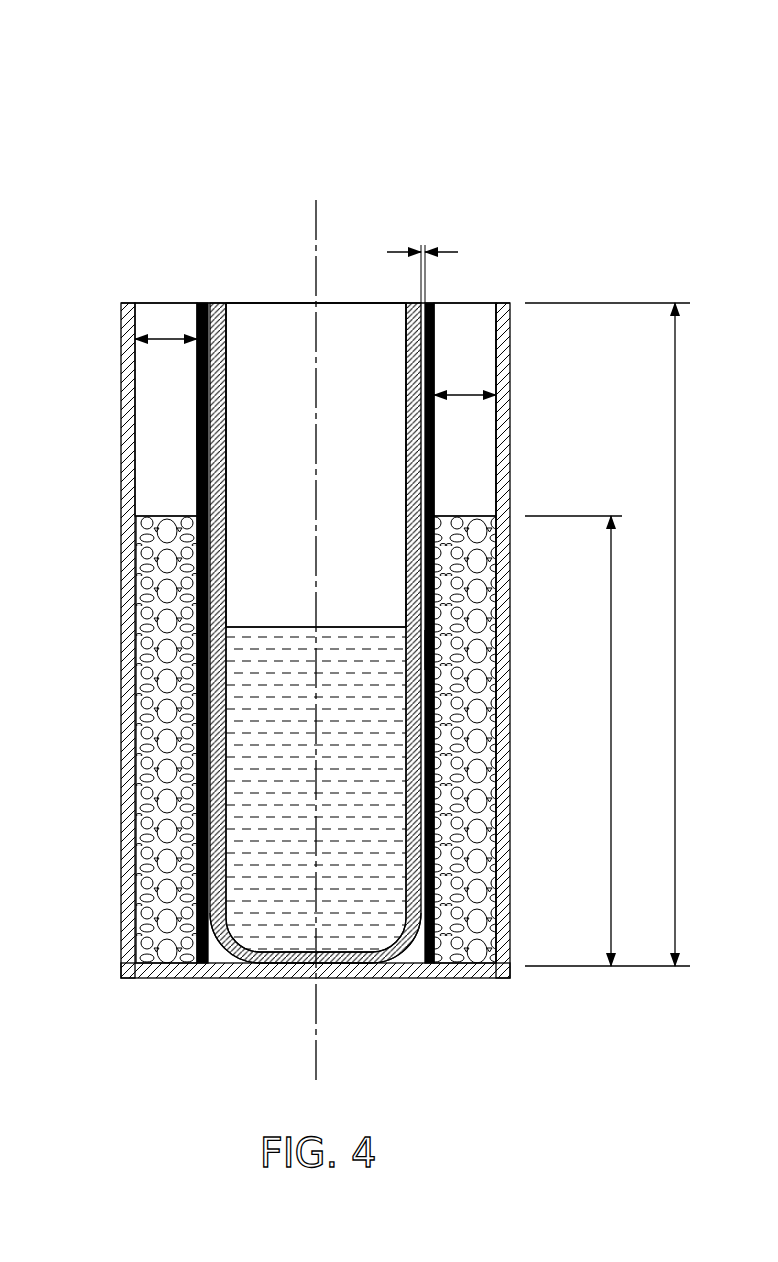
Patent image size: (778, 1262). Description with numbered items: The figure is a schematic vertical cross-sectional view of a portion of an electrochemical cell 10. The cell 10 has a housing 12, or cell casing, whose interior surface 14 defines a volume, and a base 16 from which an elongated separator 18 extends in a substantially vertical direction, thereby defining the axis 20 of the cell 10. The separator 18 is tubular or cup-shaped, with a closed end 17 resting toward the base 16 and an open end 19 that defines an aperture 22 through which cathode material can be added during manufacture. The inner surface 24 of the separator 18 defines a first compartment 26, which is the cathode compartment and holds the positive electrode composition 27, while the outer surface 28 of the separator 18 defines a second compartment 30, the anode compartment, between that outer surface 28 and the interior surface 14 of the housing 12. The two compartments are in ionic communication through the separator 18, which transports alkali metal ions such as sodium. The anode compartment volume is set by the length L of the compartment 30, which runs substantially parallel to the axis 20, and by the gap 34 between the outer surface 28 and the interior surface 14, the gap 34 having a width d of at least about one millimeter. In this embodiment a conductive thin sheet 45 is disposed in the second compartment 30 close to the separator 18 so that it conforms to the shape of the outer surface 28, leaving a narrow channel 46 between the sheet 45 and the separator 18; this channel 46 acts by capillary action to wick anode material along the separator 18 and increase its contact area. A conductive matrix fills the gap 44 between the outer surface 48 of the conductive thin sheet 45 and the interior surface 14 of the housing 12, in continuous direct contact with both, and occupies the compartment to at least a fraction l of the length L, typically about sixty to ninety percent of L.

The electrochemical cell 10 is at (590, 74).
The housing 12 is at (505, 450).
The interior surface 14 is at (488, 498).
The base 16 is at (175, 978).
The closed end 17 is at (420, 935).
The separator 18 is at (418, 688).
The open end 19 is at (216, 303).
The axis 20 is at (316, 218).
The aperture 22 is at (277, 312).
The inner surface 24 is at (218, 582).
The first compartment 26 is at (253, 523).
The positive electrode composition 27 is at (245, 838).
The outer surface 28 is at (424, 648).
The second compartment 30 is at (153, 489).
The gap 34 is at (467, 373).
The gap 44 is at (165, 341).
The conductive thin sheet 45 is at (438, 320).
The channel 46 is at (447, 252).
The outer surface 48 is at (197, 423).
The width d is at (497, 400).
The length L is at (610, 634).
The fraction of the length l is at (575, 741).